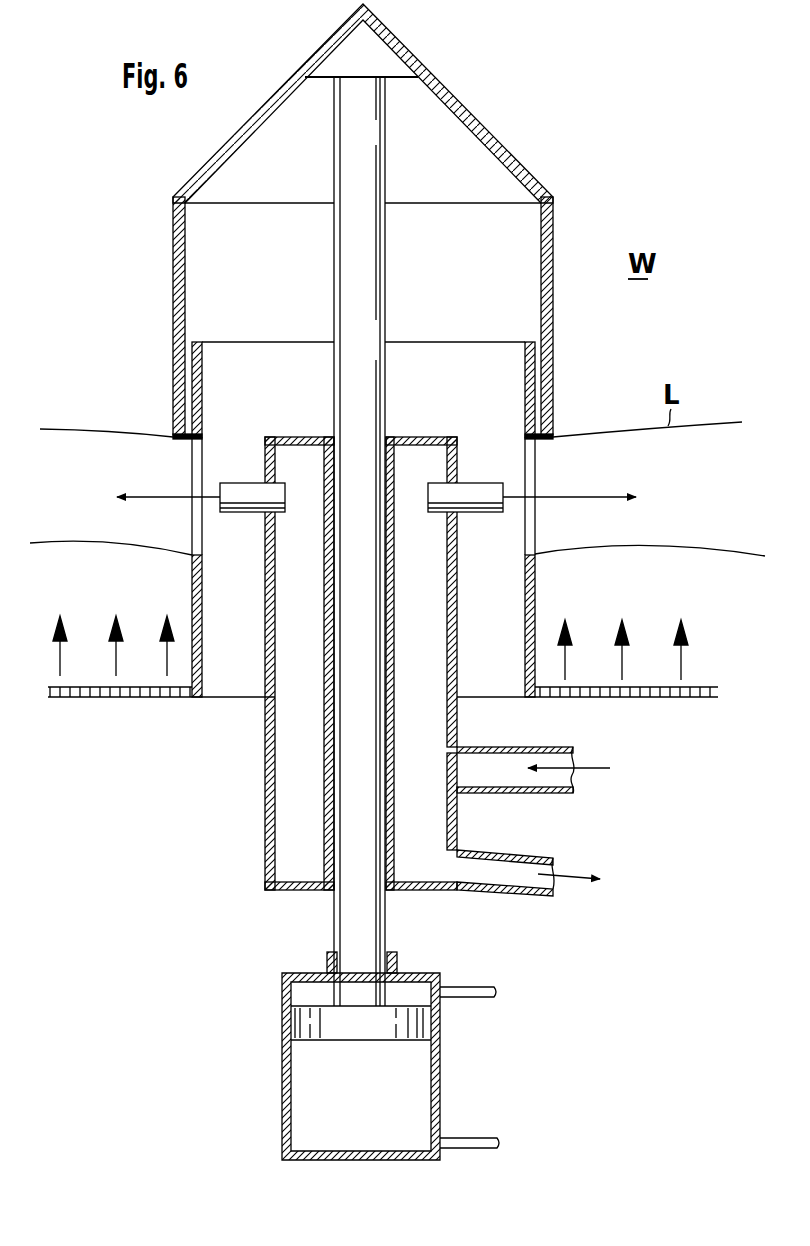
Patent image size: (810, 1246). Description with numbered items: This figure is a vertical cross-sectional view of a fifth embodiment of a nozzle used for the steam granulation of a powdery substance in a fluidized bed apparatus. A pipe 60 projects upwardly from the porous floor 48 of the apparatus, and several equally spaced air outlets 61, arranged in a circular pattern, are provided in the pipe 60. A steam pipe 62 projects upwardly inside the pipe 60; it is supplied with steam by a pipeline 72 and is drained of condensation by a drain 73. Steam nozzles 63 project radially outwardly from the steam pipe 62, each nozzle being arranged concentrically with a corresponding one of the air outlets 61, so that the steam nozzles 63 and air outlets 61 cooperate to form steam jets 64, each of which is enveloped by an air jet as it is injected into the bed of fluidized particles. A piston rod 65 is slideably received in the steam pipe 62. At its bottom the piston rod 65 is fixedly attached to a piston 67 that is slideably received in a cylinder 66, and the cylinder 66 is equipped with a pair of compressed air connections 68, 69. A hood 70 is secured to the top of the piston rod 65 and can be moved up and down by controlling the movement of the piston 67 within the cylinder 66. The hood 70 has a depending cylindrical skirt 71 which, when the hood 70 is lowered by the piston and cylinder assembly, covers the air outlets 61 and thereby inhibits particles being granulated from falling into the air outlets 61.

The porous floor 48 is at (97, 698).
The pipe 60 is at (536, 582).
The air outlets 61 is at (193, 456).
The steam pipe 62 is at (266, 800).
The steam nozzles 63 is at (243, 480).
The steam jets 64 is at (593, 497).
The piston rod 65 is at (370, 236).
The cylinder 66 is at (282, 1118).
The piston 67 is at (318, 1032).
The compressed air connection 68 is at (488, 988).
The compressed air connection 69 is at (494, 1138).
The hood 70 is at (492, 116).
The cylindrical skirt 71 is at (173, 324).
The pipeline 72 is at (560, 751).
The drain 73 is at (553, 893).